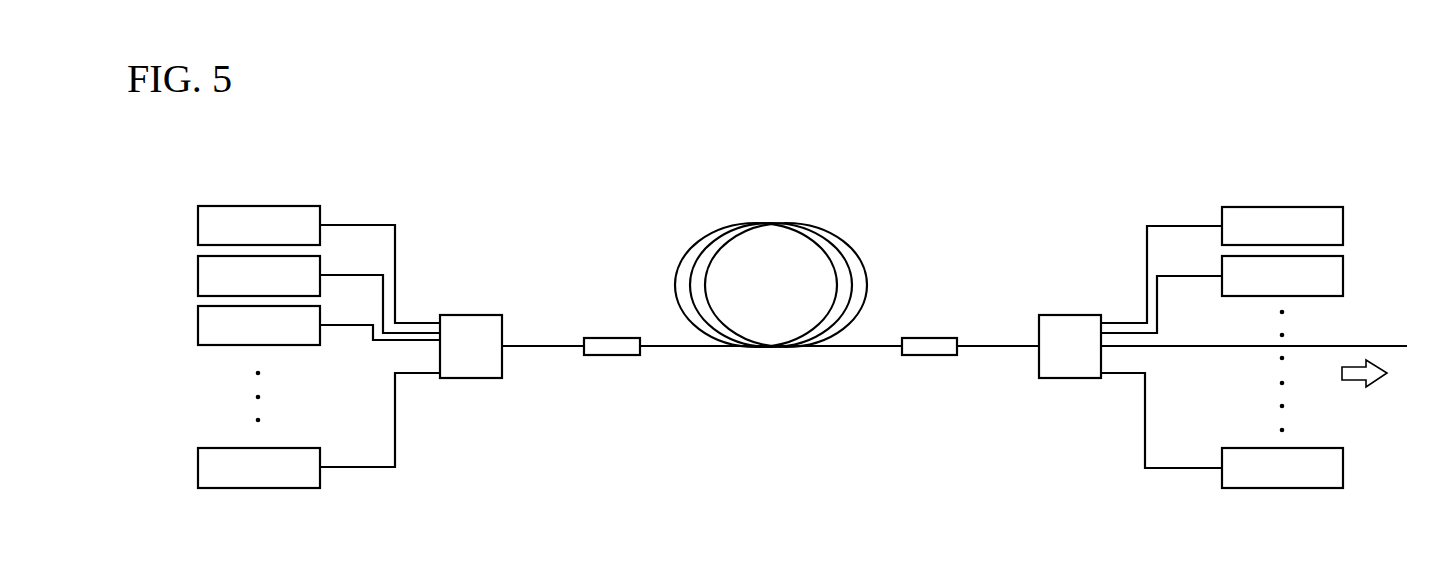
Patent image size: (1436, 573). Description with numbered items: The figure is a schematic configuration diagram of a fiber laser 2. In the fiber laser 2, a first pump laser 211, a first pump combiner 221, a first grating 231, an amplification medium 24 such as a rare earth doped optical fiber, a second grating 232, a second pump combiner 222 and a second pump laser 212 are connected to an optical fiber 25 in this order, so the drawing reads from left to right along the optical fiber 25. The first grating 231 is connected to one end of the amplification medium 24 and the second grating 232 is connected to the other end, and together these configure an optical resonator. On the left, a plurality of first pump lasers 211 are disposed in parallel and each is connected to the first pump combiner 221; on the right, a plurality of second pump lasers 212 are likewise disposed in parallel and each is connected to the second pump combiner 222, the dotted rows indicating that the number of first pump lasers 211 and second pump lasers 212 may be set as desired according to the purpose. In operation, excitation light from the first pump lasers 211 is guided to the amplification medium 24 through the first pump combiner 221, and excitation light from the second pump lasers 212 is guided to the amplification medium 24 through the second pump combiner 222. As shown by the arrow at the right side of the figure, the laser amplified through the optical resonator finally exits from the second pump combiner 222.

The fiber laser 2 is at (916, 220).
The first pump laser 211 is at (197, 228).
The second pump laser 212 is at (1344, 226).
The first pump combiner 221 is at (468, 315).
The second pump combiner 222 is at (1072, 315).
The first grating 231 is at (615, 338).
The second grating 232 is at (925, 338).
The amplification medium 24 is at (802, 223).
The optical fiber 25 is at (545, 348).